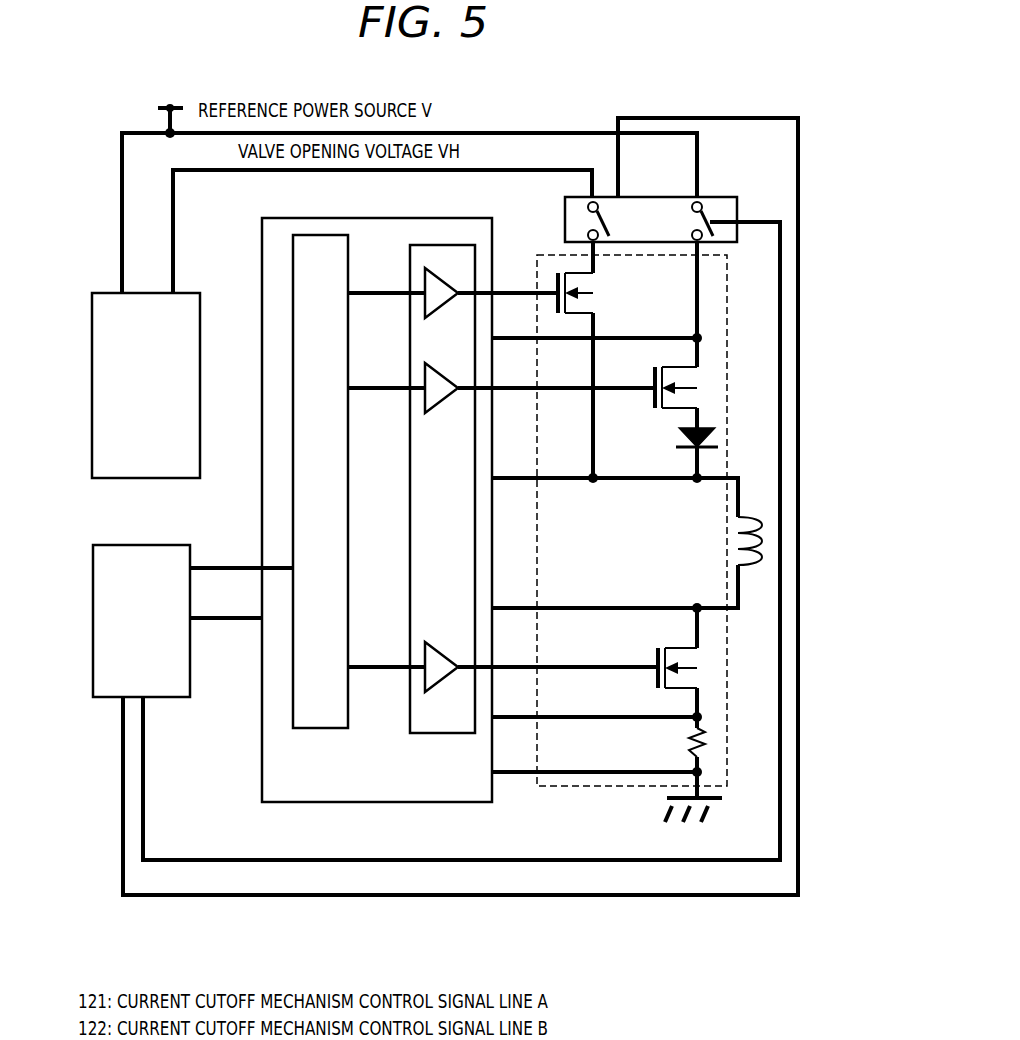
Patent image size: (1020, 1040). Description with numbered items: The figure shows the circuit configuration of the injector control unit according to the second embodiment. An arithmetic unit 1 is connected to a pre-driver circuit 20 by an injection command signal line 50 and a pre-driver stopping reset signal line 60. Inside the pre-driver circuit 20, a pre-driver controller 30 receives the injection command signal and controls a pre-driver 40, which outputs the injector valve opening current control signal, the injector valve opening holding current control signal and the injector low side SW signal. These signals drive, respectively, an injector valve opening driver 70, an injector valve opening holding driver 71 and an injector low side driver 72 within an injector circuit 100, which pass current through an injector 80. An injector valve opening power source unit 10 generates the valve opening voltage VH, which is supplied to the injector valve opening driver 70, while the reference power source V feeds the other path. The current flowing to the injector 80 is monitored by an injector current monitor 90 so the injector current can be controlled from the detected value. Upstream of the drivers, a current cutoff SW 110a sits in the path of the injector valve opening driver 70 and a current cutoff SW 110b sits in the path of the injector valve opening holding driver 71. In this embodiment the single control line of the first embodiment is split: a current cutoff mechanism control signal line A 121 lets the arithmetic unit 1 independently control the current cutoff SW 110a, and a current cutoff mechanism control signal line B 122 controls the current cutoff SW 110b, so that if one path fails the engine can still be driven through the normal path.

The arithmetic unit 1 is at (125, 545).
The injector valve opening power source unit 10 is at (95, 295).
The pre-driver circuit 20 is at (281, 768).
The pre-driver controller 30 is at (321, 708).
The pre-driver 40 is at (425, 712).
The injection command signal line 50 is at (233, 575).
The pre-driver stopping reset signal line 60 is at (224, 622).
The injector valve opening driver 70 is at (600, 285).
The injector valve opening holding driver 71 is at (690, 383).
The injector low side driver 72 is at (695, 672).
The injector 80 is at (740, 540).
The injector current monitor 90 is at (690, 744).
The injector circuit 100 is at (537, 788).
The current cutoff SW 110a is at (590, 232).
The current cutoff SW 110b is at (707, 205).
The current cutoff mechanism control signal line A 121 is at (253, 897).
The current cutoff mechanism control signal line B 122 is at (208, 857).